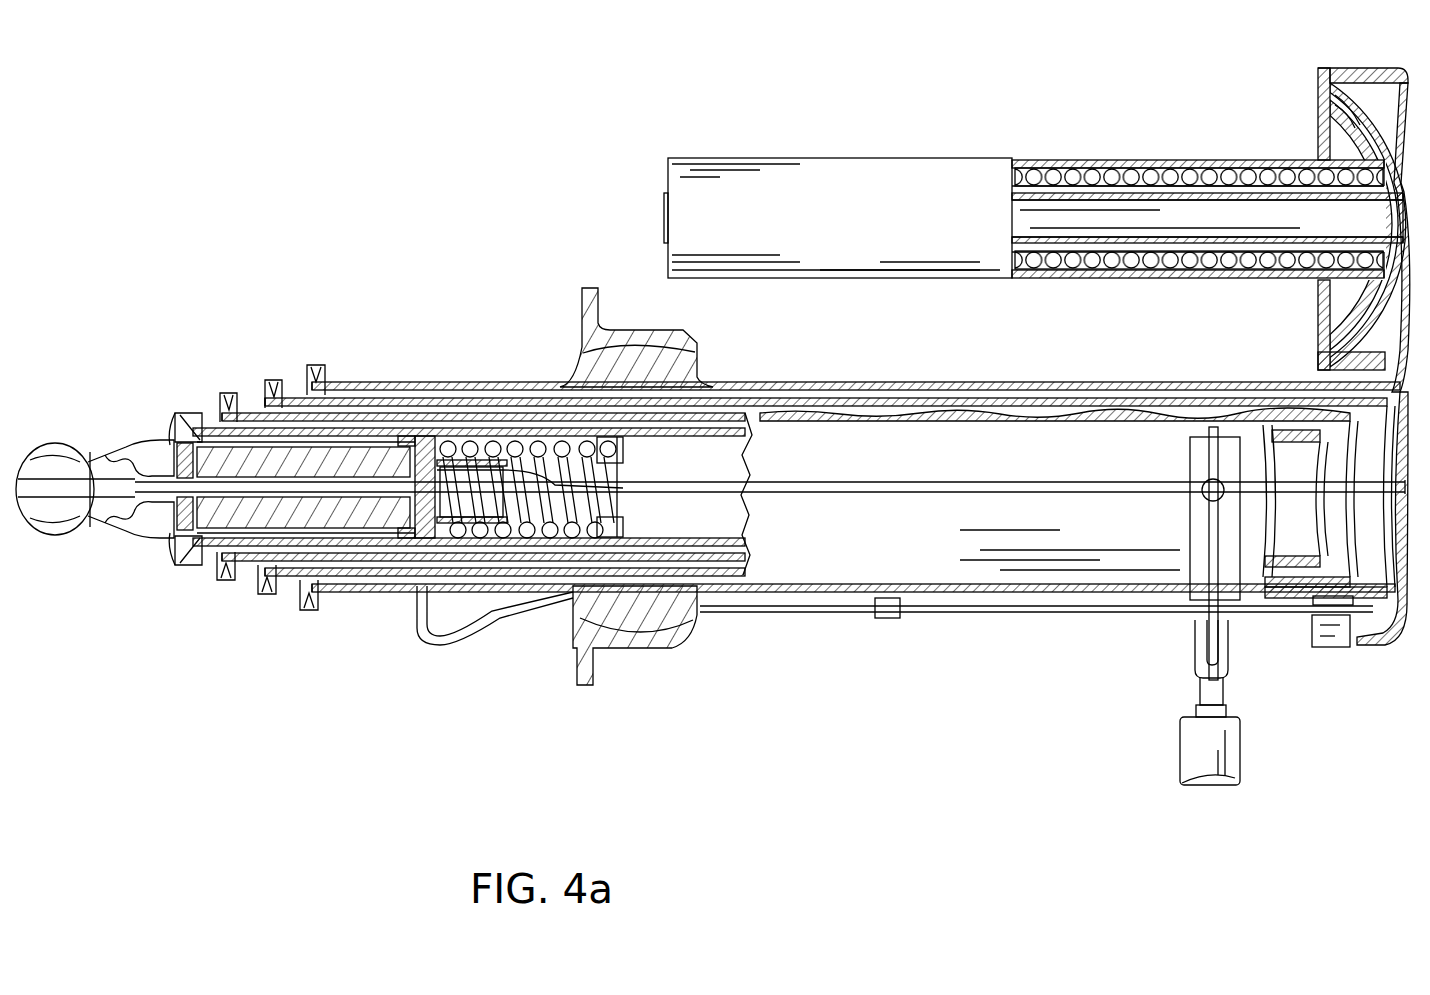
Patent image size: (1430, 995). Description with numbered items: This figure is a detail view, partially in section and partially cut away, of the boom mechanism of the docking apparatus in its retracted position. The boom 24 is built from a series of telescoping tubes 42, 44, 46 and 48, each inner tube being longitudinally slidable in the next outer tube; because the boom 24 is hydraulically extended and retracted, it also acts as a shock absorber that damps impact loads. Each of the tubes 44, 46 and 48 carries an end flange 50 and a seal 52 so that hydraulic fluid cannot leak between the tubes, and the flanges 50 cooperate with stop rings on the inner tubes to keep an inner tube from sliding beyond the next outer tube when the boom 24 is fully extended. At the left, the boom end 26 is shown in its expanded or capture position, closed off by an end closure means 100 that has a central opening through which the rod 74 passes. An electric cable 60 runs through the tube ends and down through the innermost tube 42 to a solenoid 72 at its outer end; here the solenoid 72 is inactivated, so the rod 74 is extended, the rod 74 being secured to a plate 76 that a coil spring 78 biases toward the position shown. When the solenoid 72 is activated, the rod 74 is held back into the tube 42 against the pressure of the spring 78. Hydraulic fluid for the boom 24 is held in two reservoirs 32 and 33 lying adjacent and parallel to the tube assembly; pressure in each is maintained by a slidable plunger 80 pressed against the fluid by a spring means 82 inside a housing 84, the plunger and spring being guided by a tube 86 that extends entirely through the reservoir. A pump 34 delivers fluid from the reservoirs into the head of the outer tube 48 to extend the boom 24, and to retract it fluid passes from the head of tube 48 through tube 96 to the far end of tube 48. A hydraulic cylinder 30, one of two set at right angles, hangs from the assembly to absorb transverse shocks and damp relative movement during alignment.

The boom 24 is at (286, 646).
The boom end 26 is at (70, 565).
The hydraulic cylinder 30 is at (1180, 742).
The reservoir 32 is at (1378, 76).
The reservoir 33 is at (1358, 640).
The pump 34 is at (655, 648).
The innermost tube 42 is at (210, 425).
The tube 44 is at (247, 413).
The tube 46 is at (290, 398).
The tube 48 is at (342, 382).
The end flange 50 is at (220, 405).
The seal 52 is at (218, 555).
The electric cable 60 is at (745, 485).
The solenoid 72 is at (340, 527).
The rod 74 is at (18, 478).
The plate 76 is at (427, 436).
The coil spring 78 is at (492, 440).
The slidable plunger 80 is at (1334, 133).
The spring means 82 is at (1058, 175).
The housing 84 is at (938, 158).
The tube 86 is at (1195, 190).
The tube 96 is at (448, 647).
The end closure means 100 is at (180, 441).